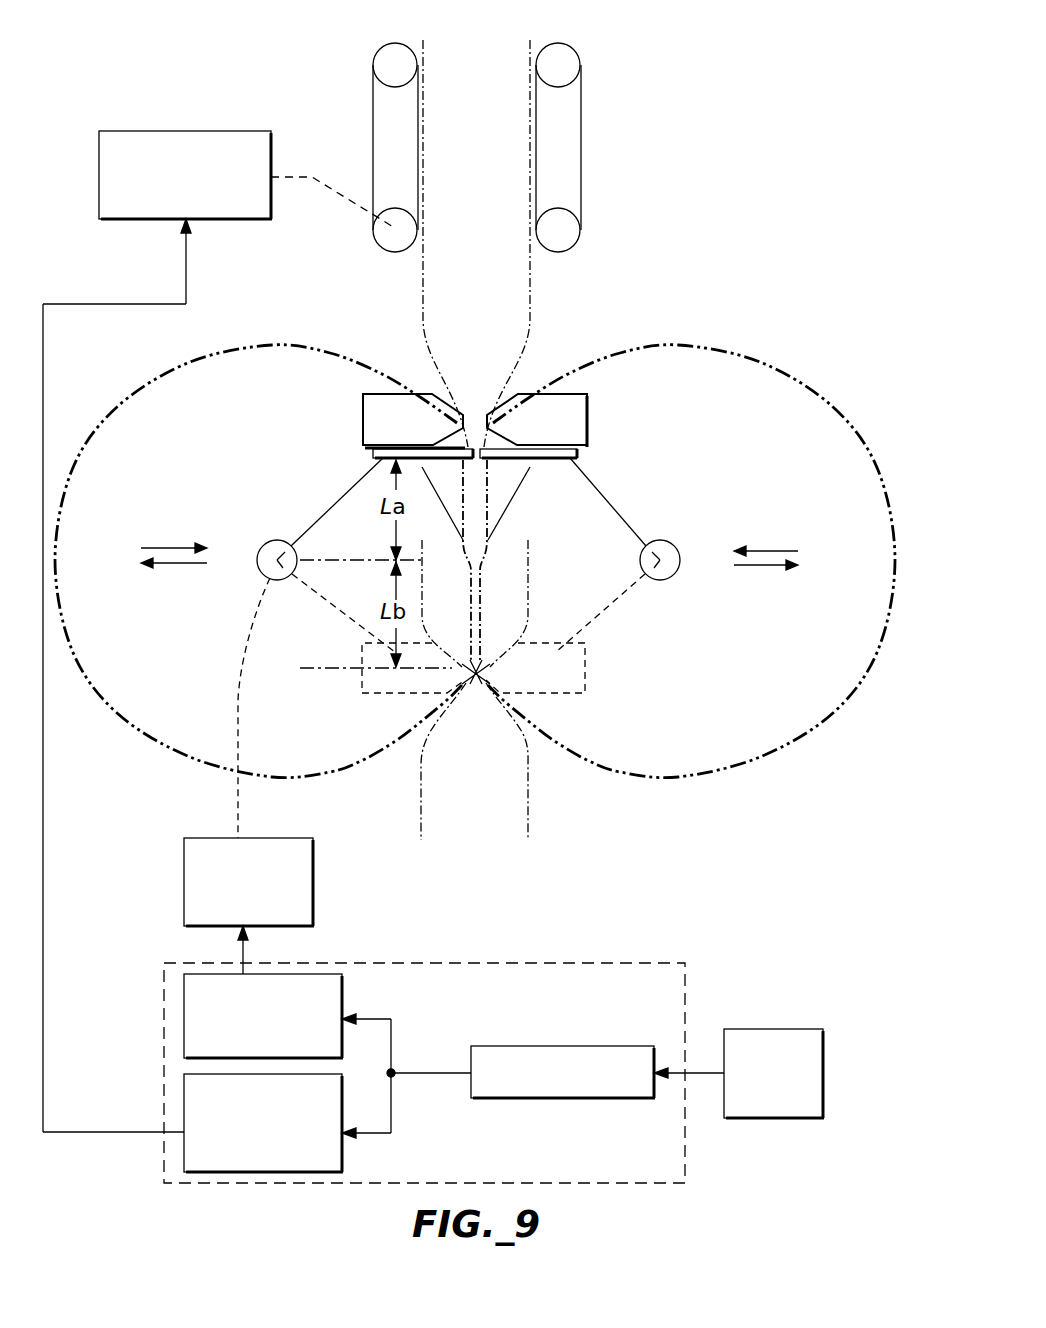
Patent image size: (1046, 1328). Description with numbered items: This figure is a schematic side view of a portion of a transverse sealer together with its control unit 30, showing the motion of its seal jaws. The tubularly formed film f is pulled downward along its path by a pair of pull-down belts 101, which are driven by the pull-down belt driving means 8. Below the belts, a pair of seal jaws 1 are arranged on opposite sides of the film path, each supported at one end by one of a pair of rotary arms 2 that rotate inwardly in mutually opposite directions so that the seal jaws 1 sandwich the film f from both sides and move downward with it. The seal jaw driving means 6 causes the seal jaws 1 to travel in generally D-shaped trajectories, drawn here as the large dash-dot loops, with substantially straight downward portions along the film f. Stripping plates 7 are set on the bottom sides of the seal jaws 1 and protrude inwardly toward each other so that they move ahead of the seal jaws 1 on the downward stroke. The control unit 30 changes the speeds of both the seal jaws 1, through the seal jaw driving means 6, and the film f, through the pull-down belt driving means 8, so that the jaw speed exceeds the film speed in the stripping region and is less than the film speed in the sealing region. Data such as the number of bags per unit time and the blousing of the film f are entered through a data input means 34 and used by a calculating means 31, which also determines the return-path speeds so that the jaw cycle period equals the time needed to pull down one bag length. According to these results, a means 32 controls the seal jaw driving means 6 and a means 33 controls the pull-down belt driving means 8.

The seal jaws 1 is at (375, 407).
The rotary arms 2 is at (326, 515).
The seal jaw driving means 6 is at (278, 838).
The stripping plates 7 is at (380, 453).
The pull-down belt driving means 8 is at (192, 131).
The control unit 30 is at (437, 1054).
The calculating means 31 is at (547, 1046).
The means for controlling the motion of the seal jaw driving means 32 is at (342, 1004).
The means for controlling the motion of the pull-down belt driving means 33 is at (342, 1144).
The data input means 34 is at (767, 1029).
The pull-down belts 101 is at (584, 125).
The film f is at (532, 302).